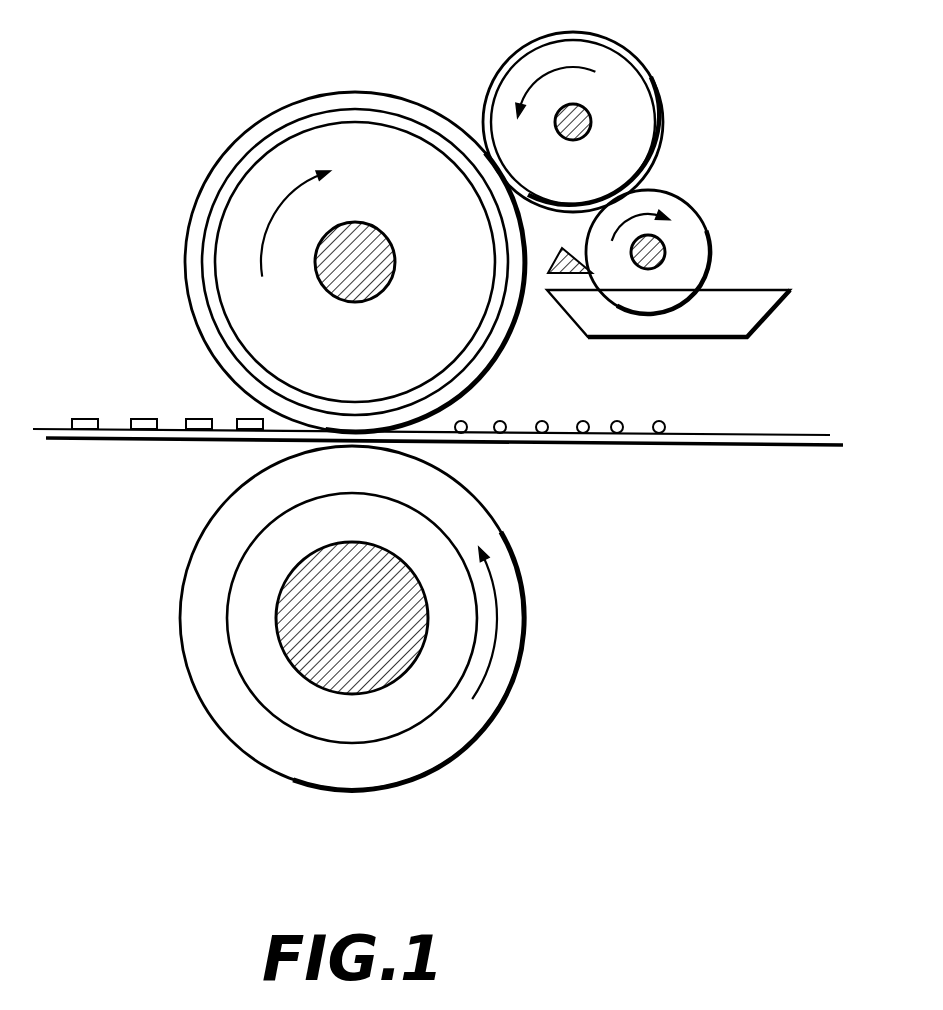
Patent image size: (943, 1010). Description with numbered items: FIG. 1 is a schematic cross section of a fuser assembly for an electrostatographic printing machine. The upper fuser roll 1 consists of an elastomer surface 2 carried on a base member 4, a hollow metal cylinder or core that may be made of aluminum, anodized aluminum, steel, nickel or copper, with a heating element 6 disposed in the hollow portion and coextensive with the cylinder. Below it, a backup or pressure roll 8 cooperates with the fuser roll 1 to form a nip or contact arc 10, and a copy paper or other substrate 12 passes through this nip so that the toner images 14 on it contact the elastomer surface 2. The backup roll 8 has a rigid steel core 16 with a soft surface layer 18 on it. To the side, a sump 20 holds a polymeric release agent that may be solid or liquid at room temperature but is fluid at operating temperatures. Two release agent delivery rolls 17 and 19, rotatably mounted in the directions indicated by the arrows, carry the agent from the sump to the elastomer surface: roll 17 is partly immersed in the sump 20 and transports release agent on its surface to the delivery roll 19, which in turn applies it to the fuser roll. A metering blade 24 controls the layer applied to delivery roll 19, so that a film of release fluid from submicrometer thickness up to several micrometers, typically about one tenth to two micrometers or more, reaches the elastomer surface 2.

The fuser roll 1 is at (159, 202).
The elastomer surface 2 is at (242, 132).
The base member 4 is at (357, 107).
The heating element 6 is at (357, 220).
The release agent delivery roll 19 is at (660, 95).
The release agent delivery roll 17 is at (712, 248).
The metering blade 24 is at (552, 270).
The sump 20 is at (765, 325).
The substrate 12 is at (693, 447).
The toner images 14 is at (658, 427).
The backup roll 8 is at (139, 622).
The nip 10 is at (297, 445).
The rigid steel core 16 is at (280, 705).
The soft surface layer 18 is at (460, 730).